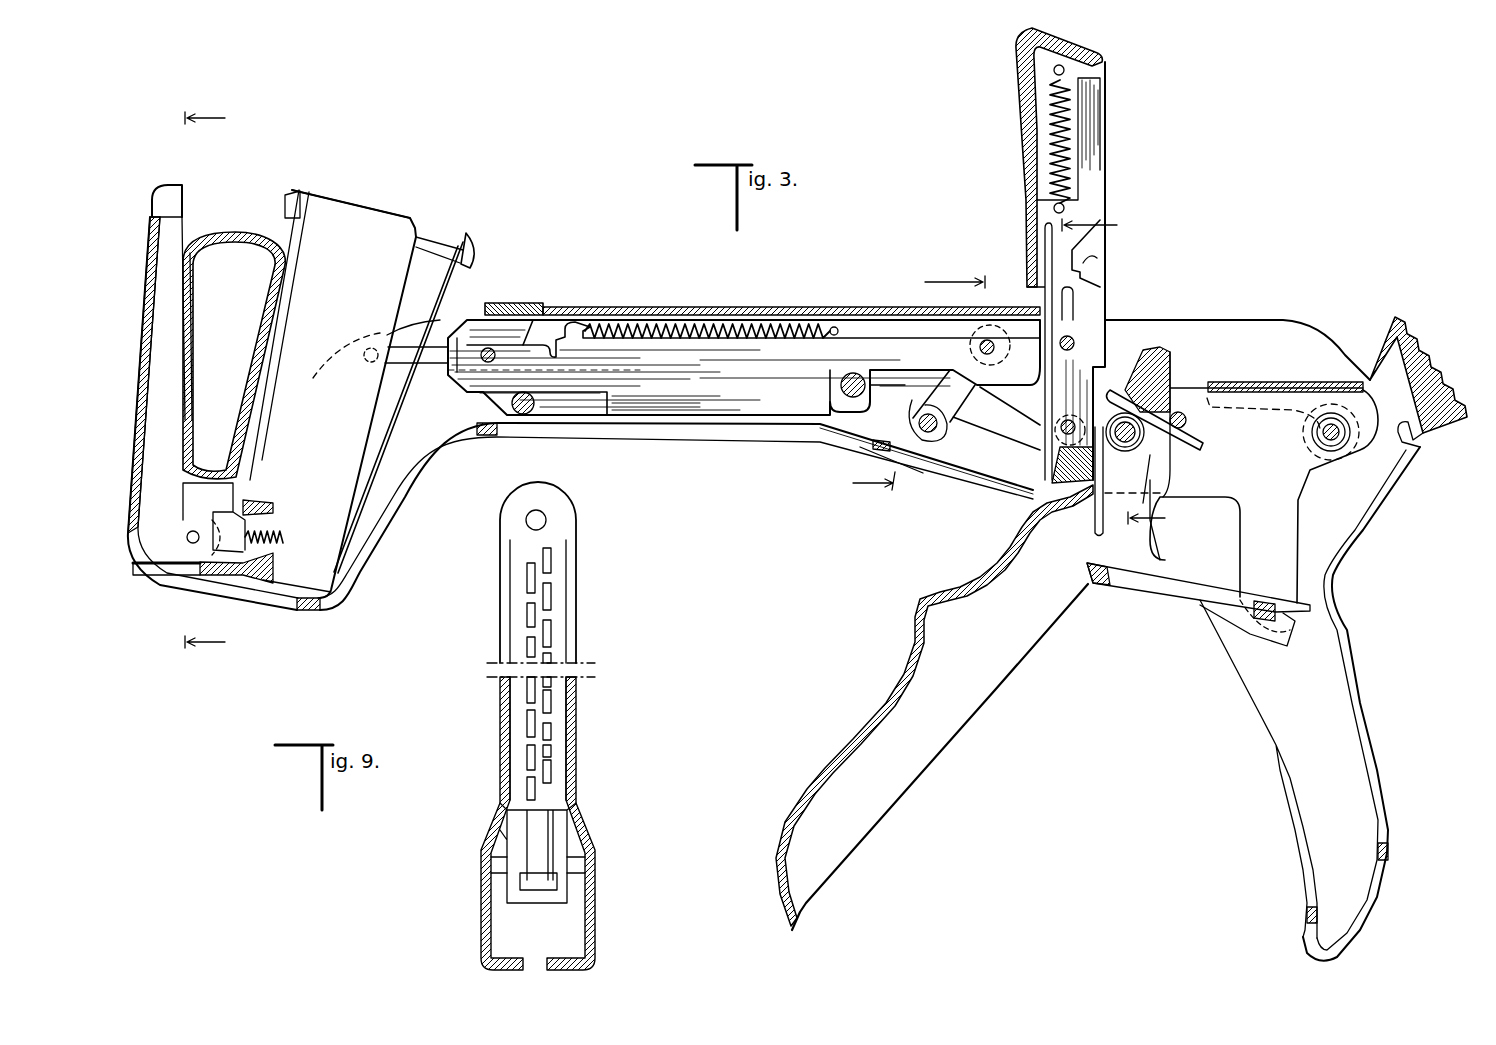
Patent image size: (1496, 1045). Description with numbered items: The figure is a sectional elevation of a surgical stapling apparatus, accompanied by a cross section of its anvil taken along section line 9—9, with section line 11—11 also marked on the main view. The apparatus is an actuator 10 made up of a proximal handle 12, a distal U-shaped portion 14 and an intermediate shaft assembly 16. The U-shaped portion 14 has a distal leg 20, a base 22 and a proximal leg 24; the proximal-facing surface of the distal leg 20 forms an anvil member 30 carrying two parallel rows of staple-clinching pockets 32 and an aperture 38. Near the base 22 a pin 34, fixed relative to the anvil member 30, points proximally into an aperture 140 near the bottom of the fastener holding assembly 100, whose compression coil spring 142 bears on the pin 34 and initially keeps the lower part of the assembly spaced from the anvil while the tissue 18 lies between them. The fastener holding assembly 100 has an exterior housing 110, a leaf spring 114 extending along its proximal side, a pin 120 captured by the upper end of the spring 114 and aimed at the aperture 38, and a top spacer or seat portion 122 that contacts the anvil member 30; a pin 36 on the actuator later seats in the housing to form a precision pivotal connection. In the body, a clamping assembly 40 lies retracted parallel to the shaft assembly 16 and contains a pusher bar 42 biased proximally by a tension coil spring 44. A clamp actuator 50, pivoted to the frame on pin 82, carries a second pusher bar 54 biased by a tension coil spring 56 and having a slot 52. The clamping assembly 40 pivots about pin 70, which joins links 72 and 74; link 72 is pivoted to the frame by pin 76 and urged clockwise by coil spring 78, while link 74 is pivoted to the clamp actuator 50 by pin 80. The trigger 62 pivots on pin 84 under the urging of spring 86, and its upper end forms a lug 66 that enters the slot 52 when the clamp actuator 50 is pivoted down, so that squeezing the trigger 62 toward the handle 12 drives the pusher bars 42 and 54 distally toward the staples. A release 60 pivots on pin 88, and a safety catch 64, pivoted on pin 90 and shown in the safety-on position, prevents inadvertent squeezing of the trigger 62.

In FIG. 3, the section line 9— 9 is at (215, 381).
In FIG. 3, the actuator 10 is at (1313, 283).
In FIG. 3, the section line 11— 11 is at (1133, 373).
In FIG. 3, the proximal handle 12 is at (1362, 702).
In FIG. 3, the distal U-shaped portion 14 is at (165, 585).
In FIG. 3, the intermediate shaft assembly 16 is at (637, 425).
In FIG. 3, the tissue 18 is at (243, 232).
In FIG. 3, the distal leg 20 is at (143, 330).
In FIG. 9, the distal leg 20 is at (499, 593).
In FIG. 3, the base 22 is at (308, 610).
In FIG. 3, the proximal leg 24 is at (400, 518).
In FIG. 3, the anvil member 30 is at (183, 235).
In FIG. 9, the anvil member 30 is at (505, 706).
In FIG. 9, the staple-clinching pockets 32 is at (551, 728).
In FIG. 3, the pin 34 is at (205, 518).
In FIG. 9, the pin 34 is at (542, 830).
In FIG. 3, the pin 36 is at (187, 537).
In FIG. 9, the pin 36 is at (583, 862).
In FIG. 9, the aperture 38 is at (548, 516).
In FIG. 3, the clamping assembly 40 is at (652, 307).
In FIG. 3, the pusher bar 42 is at (715, 410).
In FIG. 3, the tension coil spring 44 is at (706, 320).
In FIG. 3, the clamp actuator 50 is at (1023, 97).
In FIG. 3, the slot 52 is at (1097, 260).
In FIG. 3, the pusher bar 54 is at (1098, 135).
In FIG. 3, the tension coil spring 56 is at (1052, 125).
In FIG. 3, the release 60 is at (1445, 356).
In FIG. 3, the trigger 62 is at (800, 790).
In FIG. 3, the safety catch 64 is at (1128, 583).
In FIG. 3, the lug 66 is at (1162, 366).
In FIG. 3, the pin 70 is at (980, 345).
In FIG. 3, the link 72 is at (891, 385).
In FIG. 3, the link 74 is at (1015, 395).
In FIG. 3, the pin 76 is at (929, 440).
In FIG. 3, the coil spring 78 is at (850, 440).
In FIG. 3, the pin 80 is at (1062, 430).
In FIG. 3, the pin 82 is at (1075, 338).
In FIG. 3, the pin 84 is at (1136, 445).
In FIG. 3, the spring 86 is at (1205, 446).
In FIG. 3, the pin 88 is at (1312, 438).
In FIG. 3, the pin 90 is at (1268, 621).
In FIG. 3, the fastener holding assembly 100 is at (382, 183).
In FIG. 3, the exterior housing 110 is at (365, 217).
In FIG. 3, the leaf spring 114 is at (455, 292).
In FIG. 3, the pin 120 is at (447, 238).
In FIG. 3, the top spacer or seat portion 122 is at (297, 190).
In FIG. 3, the aperture 140 is at (245, 562).
In FIG. 3, the compression coil spring 142 is at (283, 530).